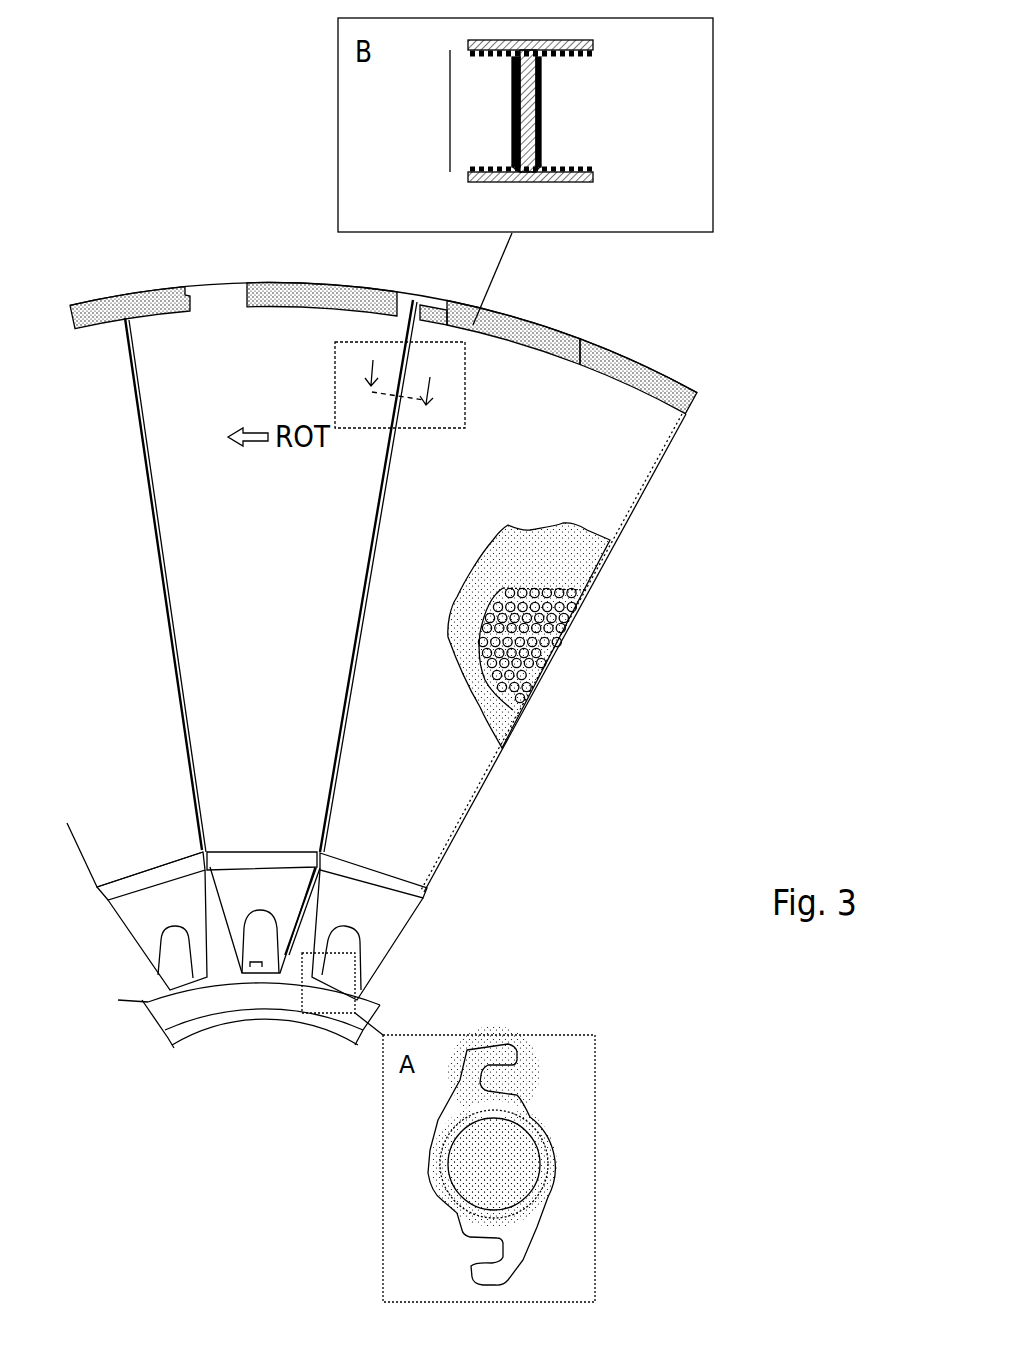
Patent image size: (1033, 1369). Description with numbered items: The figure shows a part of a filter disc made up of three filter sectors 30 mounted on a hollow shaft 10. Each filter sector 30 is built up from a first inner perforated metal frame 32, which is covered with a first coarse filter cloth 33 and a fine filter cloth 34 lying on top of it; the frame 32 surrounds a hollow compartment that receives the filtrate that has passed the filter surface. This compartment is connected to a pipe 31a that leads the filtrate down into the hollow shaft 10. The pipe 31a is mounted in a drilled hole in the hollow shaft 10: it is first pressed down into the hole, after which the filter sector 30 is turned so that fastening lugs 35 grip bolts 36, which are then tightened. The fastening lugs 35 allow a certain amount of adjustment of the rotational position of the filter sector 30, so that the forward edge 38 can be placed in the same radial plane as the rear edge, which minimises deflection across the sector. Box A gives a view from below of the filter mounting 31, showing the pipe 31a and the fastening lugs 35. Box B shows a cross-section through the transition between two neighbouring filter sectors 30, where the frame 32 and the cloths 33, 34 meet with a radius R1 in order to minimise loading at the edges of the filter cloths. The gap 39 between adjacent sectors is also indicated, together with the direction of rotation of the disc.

The hollow shaft 10 is at (193, 1000).
The filter sector 30 is at (294, 619).
The filter mounting 31 is at (279, 951).
The pipe 31a is at (527, 1133).
The inner perforated metal frame 32 is at (533, 52).
The coarse filter cloth 33 is at (570, 565).
The fine filter cloth 34 is at (590, 492).
The fastening lugs 35 is at (487, 1052).
The bolts 36 is at (180, 990).
The forward edge 38 is at (163, 345).
The blade gap slot 39 is at (378, 330).
The radius R1 is at (522, 180).